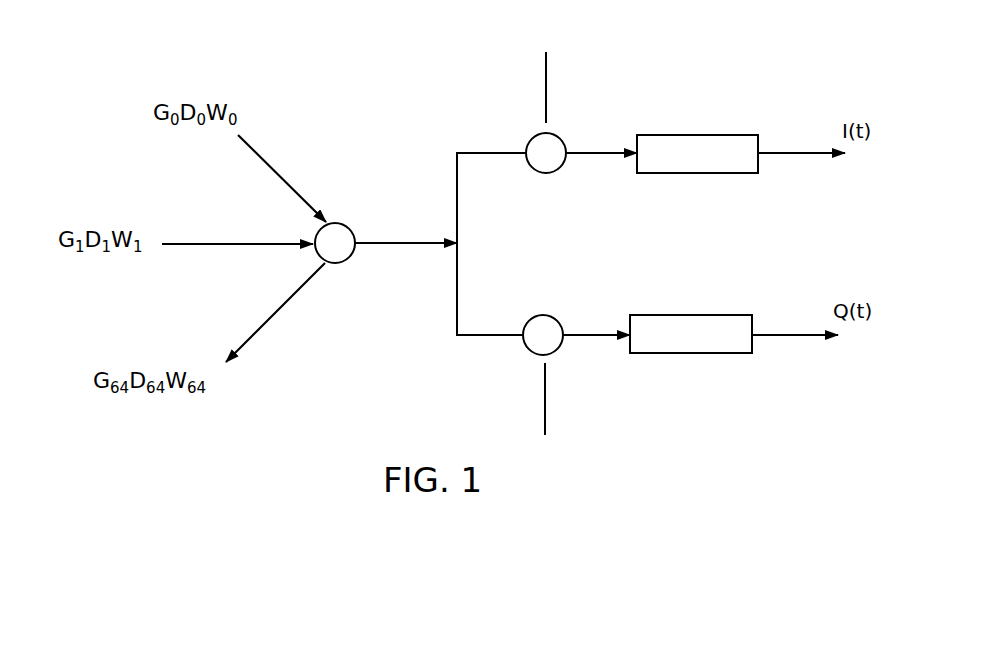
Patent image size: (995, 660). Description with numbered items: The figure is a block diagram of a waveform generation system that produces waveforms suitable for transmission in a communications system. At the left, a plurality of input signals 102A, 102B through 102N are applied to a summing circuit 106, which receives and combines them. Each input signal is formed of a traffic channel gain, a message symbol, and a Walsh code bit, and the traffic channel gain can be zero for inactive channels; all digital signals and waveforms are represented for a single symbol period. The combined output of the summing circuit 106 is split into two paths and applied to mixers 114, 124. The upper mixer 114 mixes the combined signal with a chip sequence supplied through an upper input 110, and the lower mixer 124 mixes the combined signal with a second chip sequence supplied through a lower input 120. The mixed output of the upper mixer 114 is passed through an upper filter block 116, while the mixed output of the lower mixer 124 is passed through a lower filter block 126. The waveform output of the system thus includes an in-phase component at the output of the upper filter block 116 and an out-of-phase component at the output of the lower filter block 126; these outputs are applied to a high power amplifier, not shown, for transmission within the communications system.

The input signal 102A is at (265, 155).
The input signal 102B is at (177, 243).
The input signal 102N is at (282, 305).
The summing circuit 106 is at (340, 223).
The in-phase chip sequence a_j input 110 is at (547, 102).
The mixer 114 is at (555, 133).
The in-phase pulse shaping filter h(t) 116 is at (722, 134).
The quadrature chip sequence b_j input 120 is at (546, 388).
The mixer 124 is at (553, 356).
The quadrature pulse shaping filter h(t) 126 is at (722, 314).